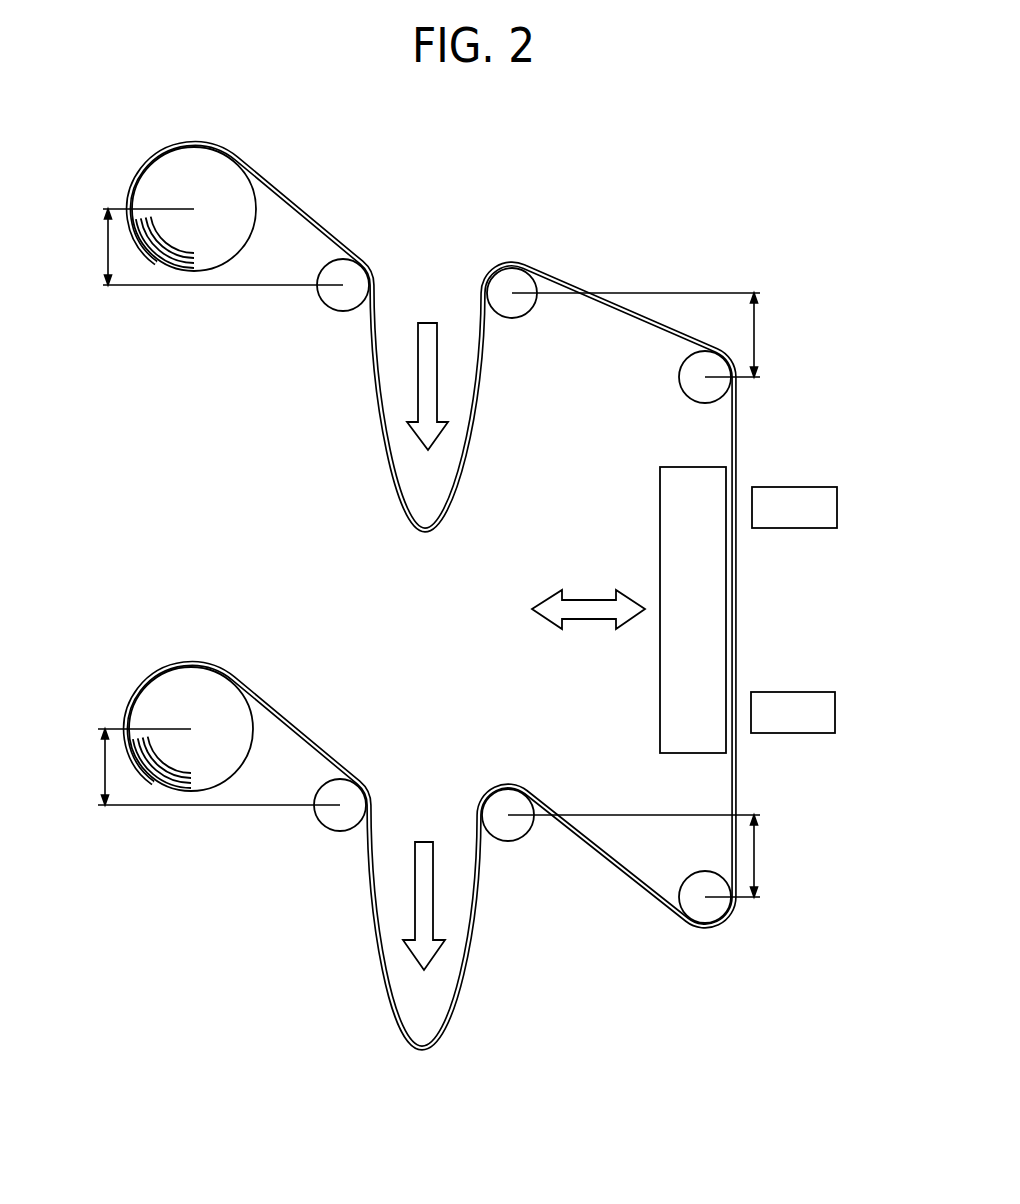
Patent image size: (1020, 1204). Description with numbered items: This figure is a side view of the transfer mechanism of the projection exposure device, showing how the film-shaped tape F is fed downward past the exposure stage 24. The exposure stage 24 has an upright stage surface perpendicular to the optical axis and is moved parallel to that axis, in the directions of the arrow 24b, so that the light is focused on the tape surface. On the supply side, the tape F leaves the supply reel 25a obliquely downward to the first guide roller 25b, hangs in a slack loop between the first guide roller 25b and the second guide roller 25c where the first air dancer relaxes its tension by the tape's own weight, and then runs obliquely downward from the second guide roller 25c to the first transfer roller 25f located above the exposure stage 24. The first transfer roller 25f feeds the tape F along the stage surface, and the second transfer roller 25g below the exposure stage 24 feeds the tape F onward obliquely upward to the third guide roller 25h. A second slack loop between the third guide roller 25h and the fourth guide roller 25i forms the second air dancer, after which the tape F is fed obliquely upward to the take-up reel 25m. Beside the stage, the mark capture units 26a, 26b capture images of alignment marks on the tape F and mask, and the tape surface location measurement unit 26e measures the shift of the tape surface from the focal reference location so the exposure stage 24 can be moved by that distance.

The tape F is at (307, 212).
The exposure stage 24 is at (660, 528).
The arrow 24b is at (552, 596).
The supply reel 25a is at (178, 180).
The first guide roller 25b is at (337, 297).
The second guide roller 25c is at (513, 307).
The first transfer roller 25f is at (693, 380).
The second transfer roller 25g is at (708, 907).
The third guide roller 25h is at (508, 828).
The fourth guide roller 25i is at (335, 815).
The take-up reel 25m is at (170, 698).
The mark capture unit 26a is at (792, 528).
The tape surface location measurement unit 26e is at (818, 535).
The mark capture unit 26b is at (790, 733).